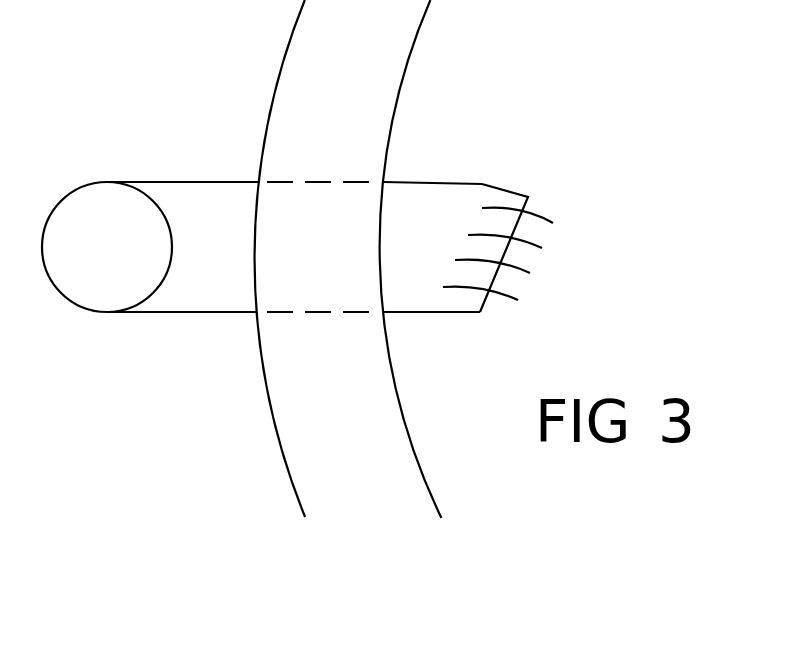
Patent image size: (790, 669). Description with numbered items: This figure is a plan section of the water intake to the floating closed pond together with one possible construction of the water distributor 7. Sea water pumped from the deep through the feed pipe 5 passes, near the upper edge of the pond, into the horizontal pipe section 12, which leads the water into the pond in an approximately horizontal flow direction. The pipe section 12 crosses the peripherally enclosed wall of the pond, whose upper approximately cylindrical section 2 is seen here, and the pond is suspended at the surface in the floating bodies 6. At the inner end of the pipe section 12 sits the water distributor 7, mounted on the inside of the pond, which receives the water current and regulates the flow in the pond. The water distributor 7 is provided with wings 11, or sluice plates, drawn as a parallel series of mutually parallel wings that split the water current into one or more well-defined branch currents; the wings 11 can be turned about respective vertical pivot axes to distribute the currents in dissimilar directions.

The upper approximately cylindrical section 2 is at (410, 51).
The feed pipe 5 is at (107, 207).
The floating bodies 6 is at (305, 51).
The water distributor 7 is at (482, 197).
The wings 11 is at (543, 223).
The horizontal pipe section 12 is at (215, 297).